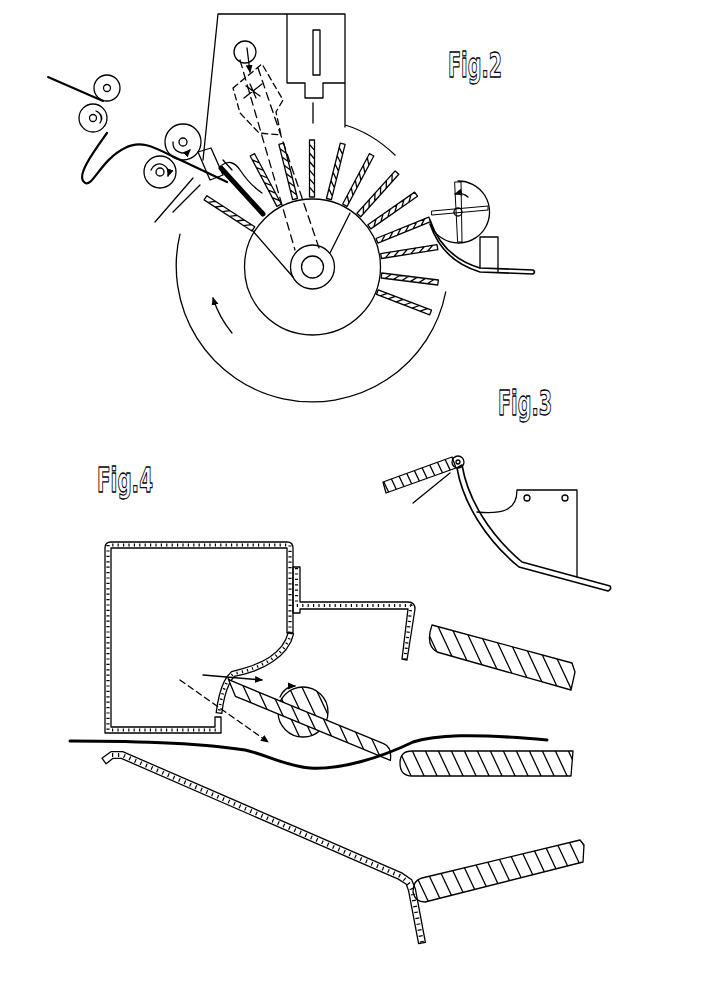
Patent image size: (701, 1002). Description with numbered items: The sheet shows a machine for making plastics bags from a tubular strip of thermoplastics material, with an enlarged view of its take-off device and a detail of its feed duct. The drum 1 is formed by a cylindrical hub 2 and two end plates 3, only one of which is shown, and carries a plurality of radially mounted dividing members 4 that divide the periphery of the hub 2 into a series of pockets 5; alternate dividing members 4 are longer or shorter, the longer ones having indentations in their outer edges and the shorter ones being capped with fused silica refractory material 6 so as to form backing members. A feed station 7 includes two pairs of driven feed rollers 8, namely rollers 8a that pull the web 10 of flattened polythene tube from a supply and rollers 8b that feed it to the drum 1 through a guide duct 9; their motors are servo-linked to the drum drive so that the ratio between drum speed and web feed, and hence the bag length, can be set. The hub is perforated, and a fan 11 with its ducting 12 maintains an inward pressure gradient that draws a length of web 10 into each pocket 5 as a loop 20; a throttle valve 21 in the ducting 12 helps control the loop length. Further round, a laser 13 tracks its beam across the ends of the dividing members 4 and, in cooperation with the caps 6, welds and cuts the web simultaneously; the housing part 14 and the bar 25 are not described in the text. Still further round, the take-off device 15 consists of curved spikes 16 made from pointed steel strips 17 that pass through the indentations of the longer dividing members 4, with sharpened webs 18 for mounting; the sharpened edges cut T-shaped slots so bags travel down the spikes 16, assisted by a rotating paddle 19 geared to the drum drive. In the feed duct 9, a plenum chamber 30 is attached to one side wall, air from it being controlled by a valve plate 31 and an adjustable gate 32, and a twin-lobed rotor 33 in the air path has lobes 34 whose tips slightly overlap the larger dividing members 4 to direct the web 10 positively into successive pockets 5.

In FIG. 2, the drum 1 is at (403, 376).
In FIG. 2, the cylindrical hub 2 is at (263, 317).
In FIG. 2, the end plate 3 is at (185, 290).
In FIG. 2, the dividing member 4 is at (418, 318).
In FIG. 4, the dividing member 4 is at (563, 748).
In FIG. 2, the pocket 5 is at (432, 270).
In FIG. 2, the refractory material cap 6 is at (316, 137).
In FIG. 2, the feed station 7 is at (150, 196).
In FIG. 2, the feed rollers 8 is at (145, 176).
In FIG. 2, the feed rollers 8a is at (118, 85).
In FIG. 2, the feed rollers 8b is at (183, 124).
In FIG. 2, the guide duct 9 is at (171, 212).
In FIG. 4, the guide duct 9 is at (276, 831).
In FIG. 2, the web 10 is at (100, 134).
In FIG. 3, the web 10 is at (430, 462).
In FIG. 4, the web 10 is at (78, 741).
In FIG. 2, the fan 11 is at (233, 87).
In FIG. 2, the ducting 12 is at (236, 50).
In FIG. 2, the laser 13 is at (320, 70).
In FIG. 2, the upper housing part 14 is at (346, 35).
In FIG. 2, the take-off device 15 is at (492, 248).
In FIG. 3, the take-off device 15 is at (582, 512).
In FIG. 3, the curved spike 16 is at (459, 504).
In FIG. 2, the pointed strip 17 is at (432, 213).
In FIG. 3, the pointed strip 17 is at (470, 487).
In FIG. 3, the web 18 is at (543, 500).
In FIG. 2, the rotating paddle 19 is at (481, 198).
In FIG. 2, the loop 20 is at (240, 210).
In FIG. 2, the throttle valve 21 is at (253, 130).
In FIG. 3, the guide bar 25 is at (402, 495).
In FIG. 4, the plenum chamber 30 is at (257, 563).
In FIG. 4, the valve plate 31 is at (253, 645).
In FIG. 4, the adjustable gate 32 is at (345, 602).
In FIG. 4, the twin-lobed rotor 33 is at (334, 696).
In FIG. 4, the lobes 34 is at (258, 692).